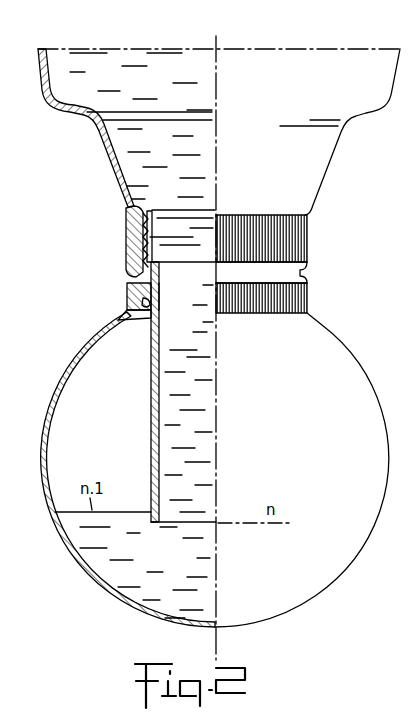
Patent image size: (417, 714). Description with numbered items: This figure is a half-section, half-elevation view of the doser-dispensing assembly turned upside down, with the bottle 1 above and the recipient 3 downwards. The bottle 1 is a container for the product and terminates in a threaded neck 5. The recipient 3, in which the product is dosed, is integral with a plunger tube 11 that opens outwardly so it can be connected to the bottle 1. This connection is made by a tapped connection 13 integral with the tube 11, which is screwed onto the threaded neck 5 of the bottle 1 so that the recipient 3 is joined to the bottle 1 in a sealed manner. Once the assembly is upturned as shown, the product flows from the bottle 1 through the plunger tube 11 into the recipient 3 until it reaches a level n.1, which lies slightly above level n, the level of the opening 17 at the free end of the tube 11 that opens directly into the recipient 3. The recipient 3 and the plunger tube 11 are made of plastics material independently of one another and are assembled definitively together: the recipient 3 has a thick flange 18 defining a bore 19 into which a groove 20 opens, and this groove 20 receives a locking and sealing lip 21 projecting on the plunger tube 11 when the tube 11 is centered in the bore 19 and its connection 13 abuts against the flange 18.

The bottle 1 is at (355, 122).
The recipient 3 is at (376, 386).
The threaded neck 5 is at (126, 226).
The plunger tube 11 is at (150, 424).
The tapped connection 13 is at (141, 247).
The opening 17 is at (181, 525).
The thick flange 18 is at (127, 292).
The bore 19 is at (160, 294).
The groove 20 is at (131, 318).
The locking and sealing lip 21 is at (150, 304).